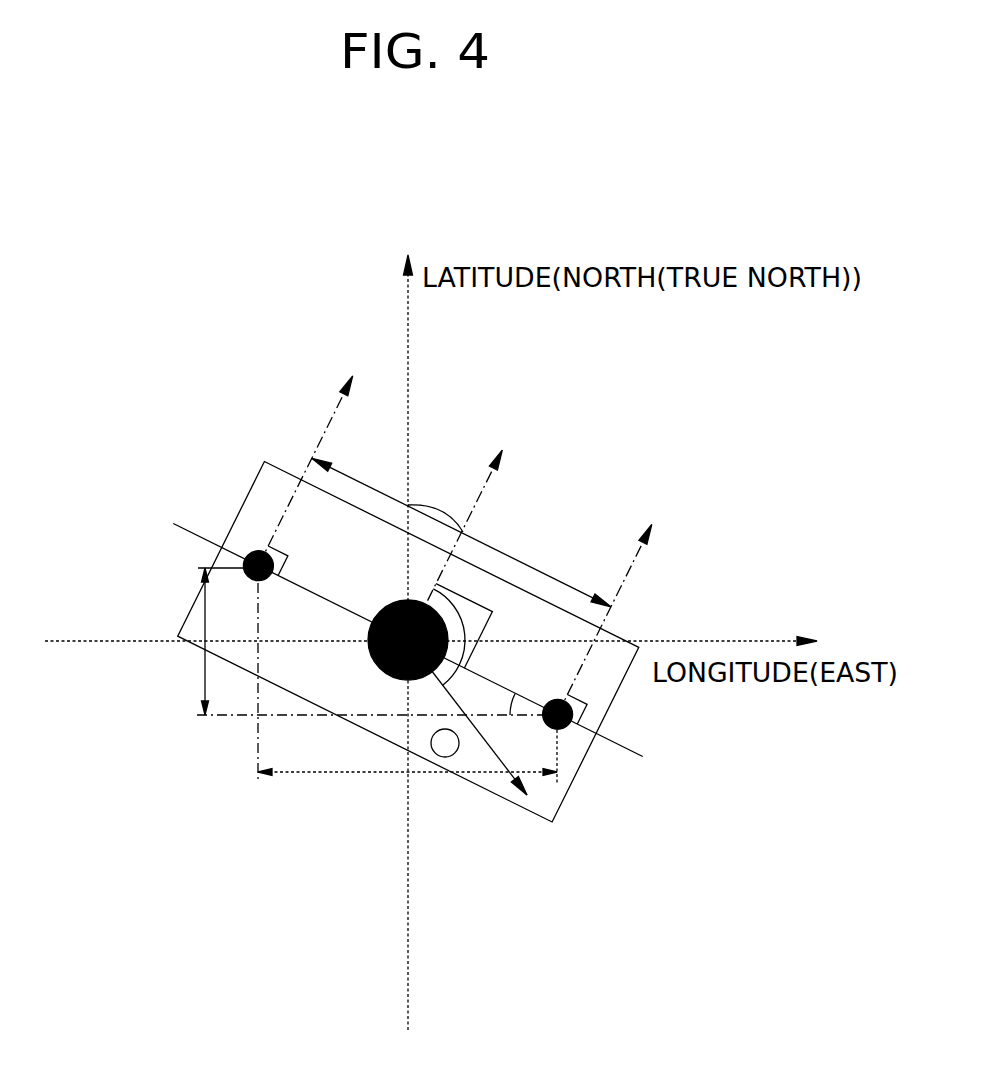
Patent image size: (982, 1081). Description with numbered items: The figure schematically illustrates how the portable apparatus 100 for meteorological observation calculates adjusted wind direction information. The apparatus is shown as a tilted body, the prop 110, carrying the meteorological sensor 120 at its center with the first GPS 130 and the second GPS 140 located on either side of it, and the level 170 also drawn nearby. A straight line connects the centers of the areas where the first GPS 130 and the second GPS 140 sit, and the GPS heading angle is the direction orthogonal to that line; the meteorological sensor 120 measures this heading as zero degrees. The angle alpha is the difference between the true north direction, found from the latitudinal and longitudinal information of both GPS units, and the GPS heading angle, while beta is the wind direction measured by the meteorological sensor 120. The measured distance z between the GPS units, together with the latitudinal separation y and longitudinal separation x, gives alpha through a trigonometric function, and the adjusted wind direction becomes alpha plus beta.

The portable apparatus for meteorological observation 100 is at (142, 217).
The prop 110 is at (187, 612).
The meteorological sensor 120 is at (392, 678).
The first GPS 130 is at (258, 550).
The second GPS 140 is at (572, 730).
The level 170 is at (445, 757).